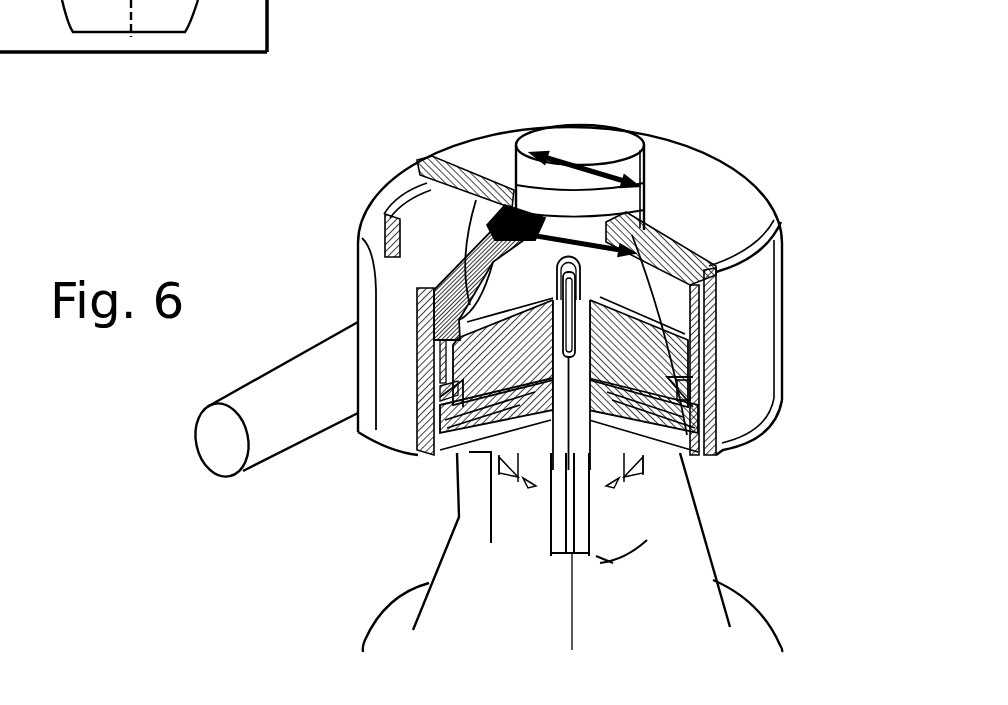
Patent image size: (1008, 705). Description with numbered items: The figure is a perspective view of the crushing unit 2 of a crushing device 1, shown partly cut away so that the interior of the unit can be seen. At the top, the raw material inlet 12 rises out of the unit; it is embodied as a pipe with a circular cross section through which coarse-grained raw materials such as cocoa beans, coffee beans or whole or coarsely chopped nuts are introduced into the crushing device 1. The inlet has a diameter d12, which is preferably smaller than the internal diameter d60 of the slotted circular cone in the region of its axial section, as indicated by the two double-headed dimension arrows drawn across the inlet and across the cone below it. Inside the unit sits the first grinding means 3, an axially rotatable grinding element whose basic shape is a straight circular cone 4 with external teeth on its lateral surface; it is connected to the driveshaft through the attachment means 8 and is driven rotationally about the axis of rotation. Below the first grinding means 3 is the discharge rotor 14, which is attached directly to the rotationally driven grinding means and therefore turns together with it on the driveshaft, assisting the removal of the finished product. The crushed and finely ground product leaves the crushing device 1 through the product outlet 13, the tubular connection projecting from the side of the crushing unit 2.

The crushing device 1 is at (92, 594).
The crushing unit 2 is at (560, 276).
The first grinding means 3 is at (703, 263).
The straight circular cone 4 is at (696, 361).
The attachment means 8 is at (519, 210).
The raw material inlet 12 is at (600, 148).
The product outlet 13 is at (218, 457).
The discharge rotor 14 is at (438, 453).
The diameter of the raw material inlet d12 is at (632, 170).
The internal diameter of the slotted circular cone d60 is at (678, 453).